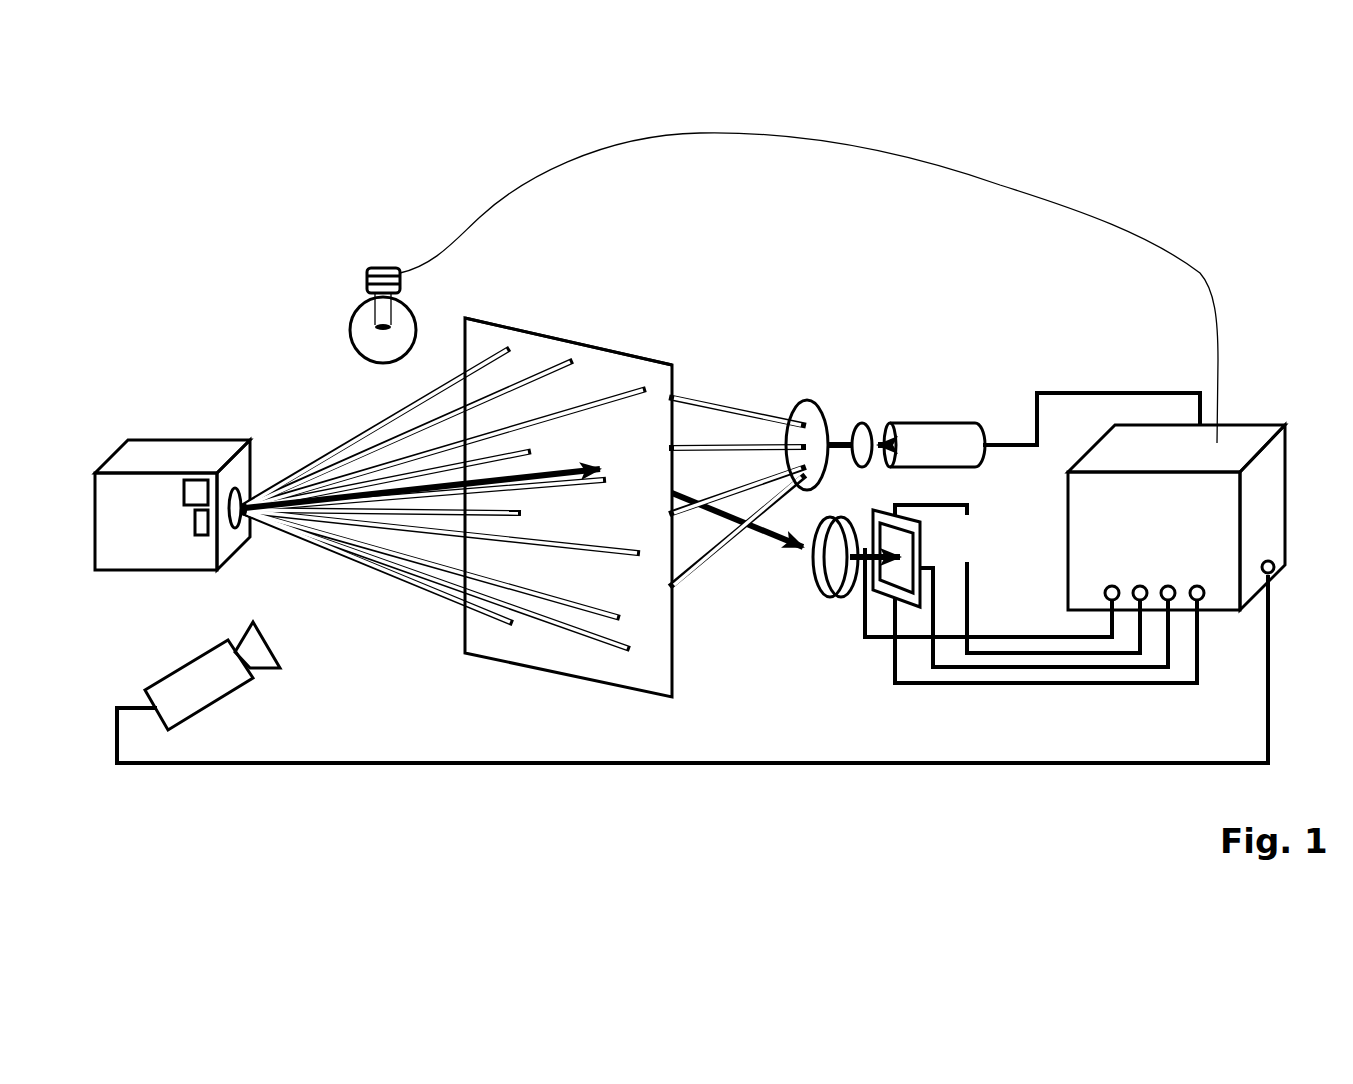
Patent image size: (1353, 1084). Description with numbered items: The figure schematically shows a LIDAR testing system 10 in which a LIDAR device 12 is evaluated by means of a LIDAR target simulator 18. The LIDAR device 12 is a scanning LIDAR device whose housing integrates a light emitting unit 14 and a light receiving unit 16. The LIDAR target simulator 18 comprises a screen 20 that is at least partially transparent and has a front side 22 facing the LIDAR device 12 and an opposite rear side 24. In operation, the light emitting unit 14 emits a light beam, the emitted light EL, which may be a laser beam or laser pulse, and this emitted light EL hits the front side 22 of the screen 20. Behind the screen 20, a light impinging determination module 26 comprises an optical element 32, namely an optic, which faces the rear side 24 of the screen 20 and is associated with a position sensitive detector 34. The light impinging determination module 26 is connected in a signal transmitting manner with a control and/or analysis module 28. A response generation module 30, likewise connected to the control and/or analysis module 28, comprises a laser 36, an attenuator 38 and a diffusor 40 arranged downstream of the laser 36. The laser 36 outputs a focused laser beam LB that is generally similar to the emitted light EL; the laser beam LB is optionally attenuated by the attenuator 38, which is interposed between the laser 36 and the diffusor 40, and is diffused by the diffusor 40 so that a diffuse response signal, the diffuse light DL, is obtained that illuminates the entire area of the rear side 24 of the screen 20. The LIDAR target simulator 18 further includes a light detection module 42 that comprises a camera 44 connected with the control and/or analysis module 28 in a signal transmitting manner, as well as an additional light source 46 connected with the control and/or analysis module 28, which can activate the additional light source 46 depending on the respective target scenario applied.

The LIDAR testing system 10 is at (1208, 231).
The LIDAR device 12 is at (152, 456).
The light emitting unit 14 is at (196, 478).
The light receiving unit 16 is at (203, 537).
The LIDAR target simulator 18 is at (752, 275).
The screen 20 is at (568, 340).
The front side 22 is at (528, 362).
The rear side 24 is at (632, 345).
The light impinging determination module 26 is at (846, 622).
The control and/or analysis module 28 is at (1257, 440).
The response generation module 30 is at (859, 375).
The optical element 32 is at (812, 568).
The position sensitive detector 34 is at (885, 580).
The laser 36 is at (975, 428).
The attenuator 38 is at (858, 430).
The diffusor 40 is at (783, 410).
The light detection module 42 is at (254, 702).
The camera 44 is at (150, 688).
The additional light source 46 is at (385, 268).
The emitted light EL is at (413, 476).
The diffuse light DL is at (692, 396).
The laser beam LB is at (882, 438).